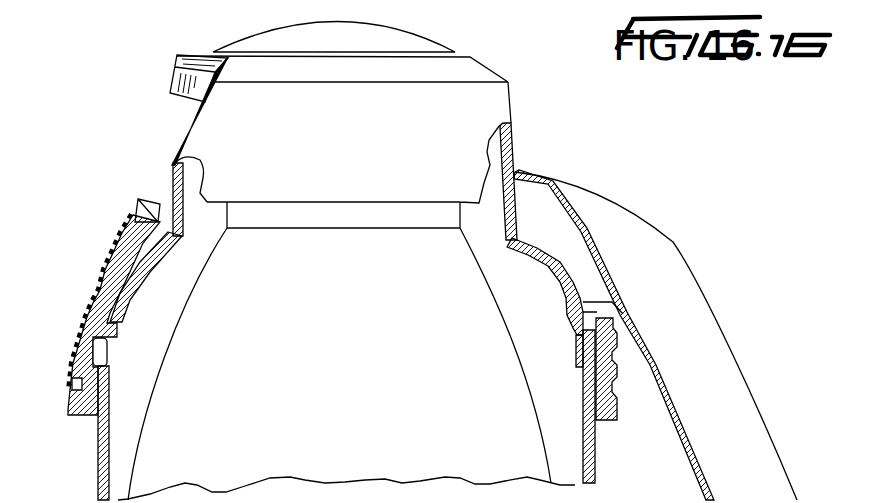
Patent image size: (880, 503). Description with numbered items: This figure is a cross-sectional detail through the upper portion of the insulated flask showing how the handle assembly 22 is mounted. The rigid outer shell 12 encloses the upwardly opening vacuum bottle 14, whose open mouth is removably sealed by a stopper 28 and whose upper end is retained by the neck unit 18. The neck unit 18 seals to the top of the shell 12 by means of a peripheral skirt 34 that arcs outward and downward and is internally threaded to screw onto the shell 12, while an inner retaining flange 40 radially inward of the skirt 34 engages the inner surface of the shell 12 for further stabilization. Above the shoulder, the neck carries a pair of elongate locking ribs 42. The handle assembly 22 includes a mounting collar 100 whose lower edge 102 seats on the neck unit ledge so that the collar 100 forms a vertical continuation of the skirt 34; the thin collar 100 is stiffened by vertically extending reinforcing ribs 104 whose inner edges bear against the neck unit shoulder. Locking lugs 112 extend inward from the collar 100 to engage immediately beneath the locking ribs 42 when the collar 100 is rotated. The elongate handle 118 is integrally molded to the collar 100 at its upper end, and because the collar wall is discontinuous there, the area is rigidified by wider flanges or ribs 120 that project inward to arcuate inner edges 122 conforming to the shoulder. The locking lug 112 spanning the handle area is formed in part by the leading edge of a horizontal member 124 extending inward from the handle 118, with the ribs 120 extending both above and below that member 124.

The outer shell 12 is at (603, 470).
The vacuum bottle 14 is at (130, 443).
The neck unit 18 is at (524, 125).
The handle assembly 22 is at (655, 305).
The stopper 28 is at (400, 33).
The peripheral skirt 34 is at (78, 384).
The inner retaining flange 40 is at (107, 353).
The locking ribs 42 is at (200, 160).
The mounting collar 100 is at (113, 214).
The lower edge 102 is at (82, 328).
The reinforcing ribs 104 is at (142, 205).
The locking lugs 112 is at (173, 243).
The handle 118 is at (708, 302).
The flanges or ribs 120 is at (573, 253).
The arcuate inner edges 122 is at (540, 253).
The horizontal member 124 is at (541, 197).